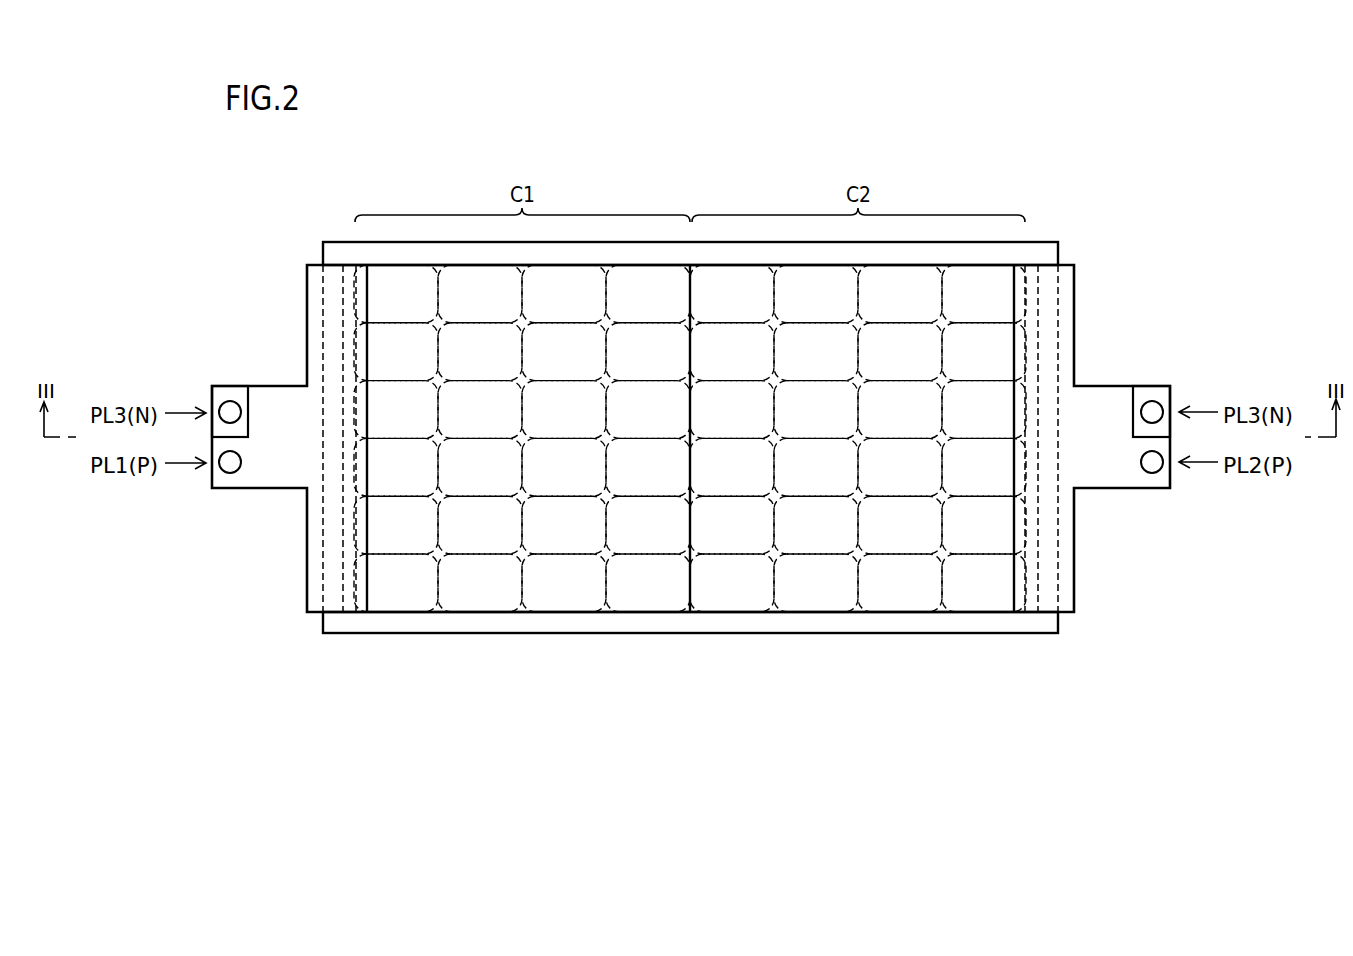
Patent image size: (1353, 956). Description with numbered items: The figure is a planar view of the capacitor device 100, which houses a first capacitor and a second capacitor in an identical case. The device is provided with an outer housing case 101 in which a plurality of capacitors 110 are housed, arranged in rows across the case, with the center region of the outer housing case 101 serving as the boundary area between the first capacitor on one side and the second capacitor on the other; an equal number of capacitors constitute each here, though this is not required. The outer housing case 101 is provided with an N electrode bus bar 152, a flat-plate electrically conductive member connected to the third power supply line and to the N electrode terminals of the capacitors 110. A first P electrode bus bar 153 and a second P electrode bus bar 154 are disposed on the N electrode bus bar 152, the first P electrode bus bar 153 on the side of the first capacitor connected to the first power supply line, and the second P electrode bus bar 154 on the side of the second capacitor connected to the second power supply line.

The capacitor device 100 is at (1059, 190).
The outer housing case 101 is at (1045, 254).
The capacitors 110 is at (565, 468).
The N electrode bus bar 152 is at (357, 292).
The first P electrode bus bar 153 is at (248, 473).
The second P electrode bus bar 154 is at (1133, 472).